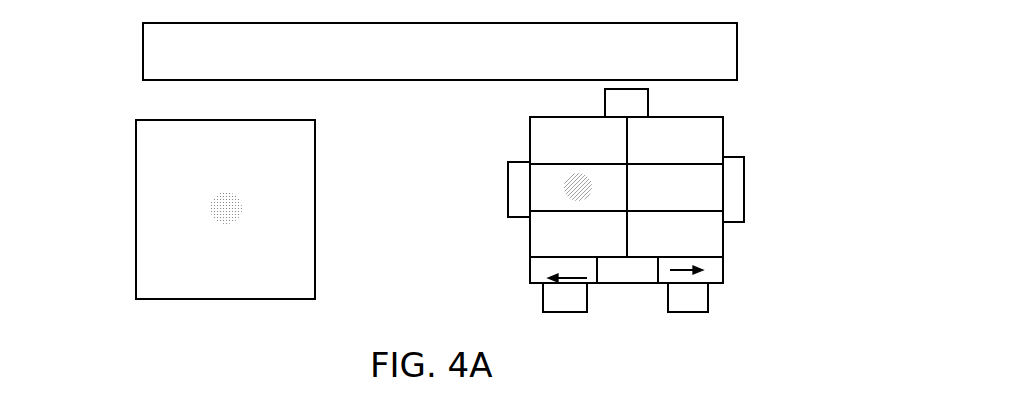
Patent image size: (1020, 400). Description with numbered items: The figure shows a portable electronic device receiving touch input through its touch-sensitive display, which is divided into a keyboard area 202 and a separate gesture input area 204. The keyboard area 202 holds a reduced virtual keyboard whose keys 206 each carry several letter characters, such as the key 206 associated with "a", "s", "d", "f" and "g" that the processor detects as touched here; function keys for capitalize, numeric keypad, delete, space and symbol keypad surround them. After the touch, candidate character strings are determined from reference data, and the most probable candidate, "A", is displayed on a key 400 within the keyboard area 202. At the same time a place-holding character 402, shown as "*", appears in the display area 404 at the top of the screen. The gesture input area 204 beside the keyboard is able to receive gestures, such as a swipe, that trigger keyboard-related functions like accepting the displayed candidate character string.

The key 400 is at (617, 277).
The place-holding character 402 is at (156, 50).
The display area 404 is at (717, 51).
The gesture input area 204 is at (158, 152).
The keyboard area 202 is at (708, 141).
The keys 206 is at (707, 234).